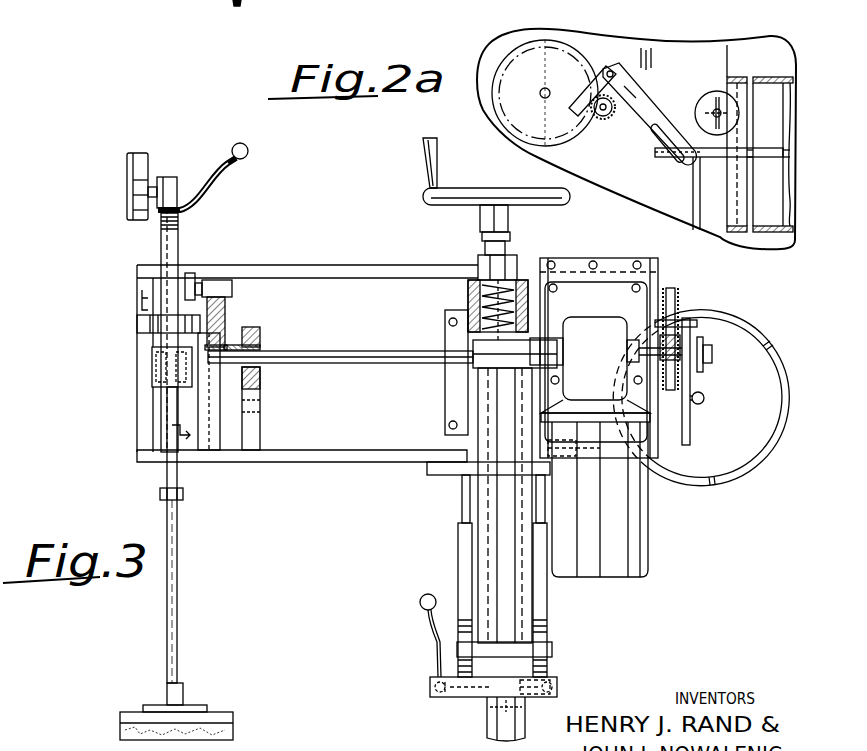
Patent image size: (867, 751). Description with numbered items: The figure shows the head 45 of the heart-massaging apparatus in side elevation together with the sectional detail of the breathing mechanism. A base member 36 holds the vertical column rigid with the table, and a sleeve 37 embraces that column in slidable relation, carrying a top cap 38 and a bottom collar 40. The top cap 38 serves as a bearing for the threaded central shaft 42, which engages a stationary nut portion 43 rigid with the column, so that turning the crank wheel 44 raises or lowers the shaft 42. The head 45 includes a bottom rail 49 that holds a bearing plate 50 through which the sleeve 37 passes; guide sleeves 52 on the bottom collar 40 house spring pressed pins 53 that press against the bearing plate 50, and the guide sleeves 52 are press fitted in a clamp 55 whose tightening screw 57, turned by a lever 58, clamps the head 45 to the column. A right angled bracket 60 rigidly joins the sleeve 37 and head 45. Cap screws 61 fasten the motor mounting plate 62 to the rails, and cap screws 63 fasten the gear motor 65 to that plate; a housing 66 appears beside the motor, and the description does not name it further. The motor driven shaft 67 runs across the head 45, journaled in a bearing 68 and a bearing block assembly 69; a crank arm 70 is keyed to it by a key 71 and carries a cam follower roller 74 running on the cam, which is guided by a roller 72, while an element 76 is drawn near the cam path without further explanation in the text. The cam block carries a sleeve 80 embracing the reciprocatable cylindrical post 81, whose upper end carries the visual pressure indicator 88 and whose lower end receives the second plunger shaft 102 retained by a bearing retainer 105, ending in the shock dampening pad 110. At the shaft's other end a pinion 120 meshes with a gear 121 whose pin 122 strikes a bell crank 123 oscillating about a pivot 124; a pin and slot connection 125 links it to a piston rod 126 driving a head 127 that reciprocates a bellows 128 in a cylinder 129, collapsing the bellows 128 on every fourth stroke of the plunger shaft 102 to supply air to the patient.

In FIG. 3, the base member 36 is at (489, 723).
In FIG. 3, the sleeve 37 is at (497, 526).
In FIG. 3, the top cap 38 is at (478, 264).
In FIG. 3, the bottom collar 40 is at (545, 648).
In FIG. 3, the central shaft 42 is at (506, 300).
In FIG. 3, the stationary nut portion 43 is at (470, 312).
In FIG. 3, the crank wheel 44 is at (462, 196).
In FIG. 3, the head 45 is at (270, 259).
In FIG. 3, the bottom rail 49 is at (340, 464).
In FIG. 3, the bearing plate 50 is at (427, 467).
In FIG. 3, the guide sleeves 52 is at (458, 562).
In FIG. 3, the spring pressed pins 53 is at (462, 498).
In FIG. 3, the clamp 55 is at (552, 686).
In FIG. 3, the tightening screw 57 is at (430, 688).
In FIG. 3, the lever 58 is at (428, 627).
In FIG. 3, the right angled bracket 60 is at (445, 402).
In FIG. 3, the cap screws 61 is at (553, 262).
In FIG. 3, the motor mounting plate 62 is at (593, 261).
In FIG. 3, the cap screws 63 is at (631, 288).
In FIG. 3, the gear motor 65 is at (582, 328).
In FIG. 3, the housing column 66 is at (649, 538).
In FIG. 3, the motor driven shaft 67 is at (341, 352).
In FIG. 3, the bearing 68 is at (262, 335).
In FIG. 3, the bearing block assembly 69 is at (262, 383).
In FIG. 3, the crank arm 70 is at (226, 322).
In FIG. 3, the key 71 is at (202, 372).
In FIG. 3, the roller 72 is at (180, 395).
In FIG. 3, the cam follower roller 74 is at (194, 280).
In FIG. 3, the pin 76 is at (172, 428).
In FIG. 3, the sleeve 80 is at (152, 373).
In FIG. 3, the cylindrical post 81 is at (161, 243).
In FIG. 3, the visual pressure indicator 88 is at (127, 173).
In FIG. 3, the second plunger shaft 102 is at (178, 572).
In FIG. 3, the bearing retainer 105 is at (183, 495).
In FIG. 3, the sponge rubber shock dampening pad 110 is at (233, 731).
In FIG. 2A, the pinion 120 is at (600, 120).
In FIG. 3, the pinion 120 is at (672, 346).
In FIG. 2A, the gear 121 is at (572, 88).
In FIG. 3, the gear 121 is at (677, 306).
In FIG. 2A, the pin 122 is at (558, 104).
In FIG. 2A, the bell crank 123 is at (633, 100).
In FIG. 2A, the pivot 124 is at (624, 73).
In FIG. 2A, the pin and slot connection 125 is at (672, 128).
In FIG. 2A, the piston rod 126 is at (668, 160).
In FIG. 3, the piston rod 126 is at (705, 397).
In FIG. 2A, the head 127 is at (782, 84).
In FIG. 2A, the bellows 128 is at (795, 72).
In FIG. 2A, the cylinder 129 is at (772, 250).
In FIG. 3, the cylinder 129 is at (756, 465).